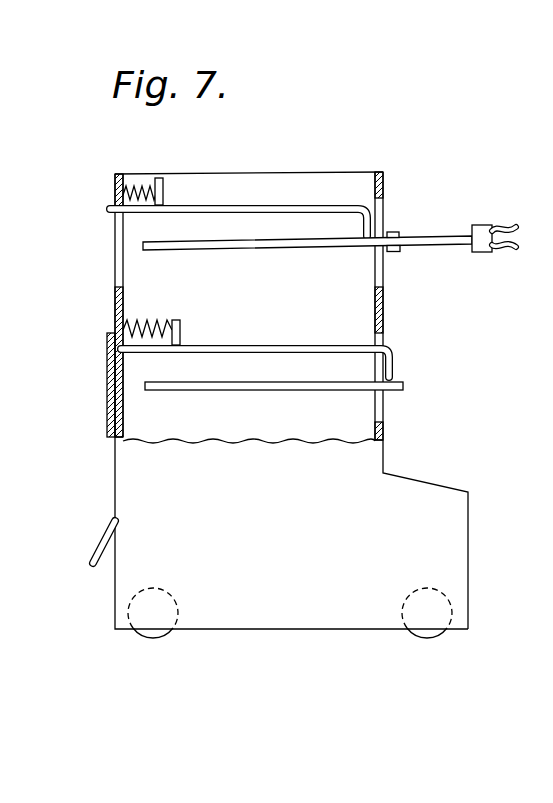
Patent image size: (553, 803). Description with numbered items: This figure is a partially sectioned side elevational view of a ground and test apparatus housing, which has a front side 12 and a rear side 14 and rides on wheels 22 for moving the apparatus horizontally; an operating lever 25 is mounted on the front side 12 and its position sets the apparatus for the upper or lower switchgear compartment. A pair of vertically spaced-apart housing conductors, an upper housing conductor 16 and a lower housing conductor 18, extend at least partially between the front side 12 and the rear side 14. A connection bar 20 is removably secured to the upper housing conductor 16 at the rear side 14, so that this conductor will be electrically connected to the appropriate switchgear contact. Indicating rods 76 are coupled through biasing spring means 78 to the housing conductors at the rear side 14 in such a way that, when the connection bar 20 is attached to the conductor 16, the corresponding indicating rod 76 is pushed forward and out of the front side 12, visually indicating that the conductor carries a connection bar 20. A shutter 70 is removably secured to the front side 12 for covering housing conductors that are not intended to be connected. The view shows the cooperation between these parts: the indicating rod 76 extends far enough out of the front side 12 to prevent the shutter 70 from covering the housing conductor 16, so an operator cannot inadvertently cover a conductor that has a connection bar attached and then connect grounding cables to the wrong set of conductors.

The front side 12 is at (122, 498).
The rear side 14 is at (468, 553).
The upper housing conductor 16 is at (213, 251).
The lower housing conductor 18 is at (222, 391).
The connection bar 20 is at (455, 246).
The wheels 22 is at (163, 636).
The operating lever 25 is at (92, 563).
The shutter 70 is at (107, 420).
The indicating rod 76 is at (295, 206).
The biasing spring means 78 is at (132, 187).